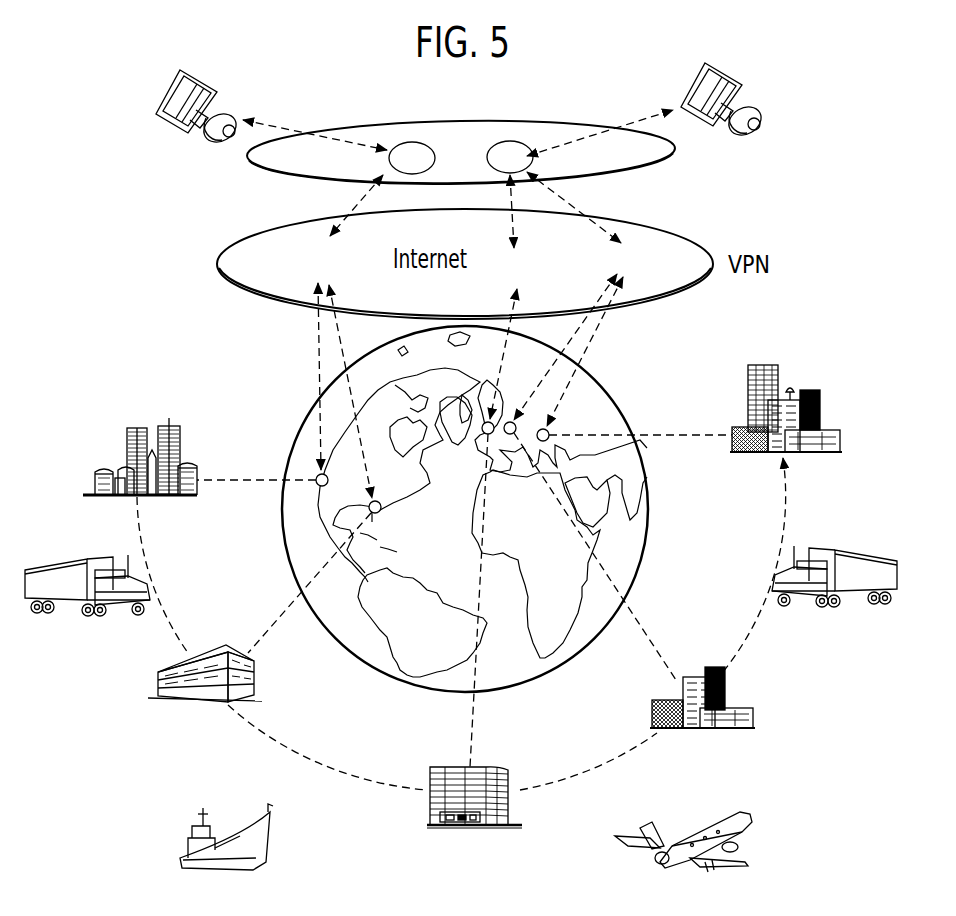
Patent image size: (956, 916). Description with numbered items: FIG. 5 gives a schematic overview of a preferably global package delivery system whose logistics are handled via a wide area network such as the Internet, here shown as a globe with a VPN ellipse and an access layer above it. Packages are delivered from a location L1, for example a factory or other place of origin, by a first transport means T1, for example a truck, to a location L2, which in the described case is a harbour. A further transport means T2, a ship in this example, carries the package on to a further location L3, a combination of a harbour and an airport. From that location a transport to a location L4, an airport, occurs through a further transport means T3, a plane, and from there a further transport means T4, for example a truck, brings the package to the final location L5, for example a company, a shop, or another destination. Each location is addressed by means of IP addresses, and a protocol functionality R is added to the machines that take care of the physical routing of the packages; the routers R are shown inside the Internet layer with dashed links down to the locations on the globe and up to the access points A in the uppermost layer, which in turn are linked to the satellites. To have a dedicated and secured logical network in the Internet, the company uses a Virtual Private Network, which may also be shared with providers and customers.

The location L1 is at (127, 432).
The location L2 is at (200, 705).
The location L3 is at (462, 829).
The location L4 is at (755, 718).
The location L5 is at (842, 438).
The first transport means T1 is at (100, 616).
The further transport means T2 is at (182, 858).
The further transport means T3 is at (752, 823).
The further transport means T4 is at (870, 553).
The access point / antenna station A is at (461, 157).
The protocol functionality R is at (474, 261).